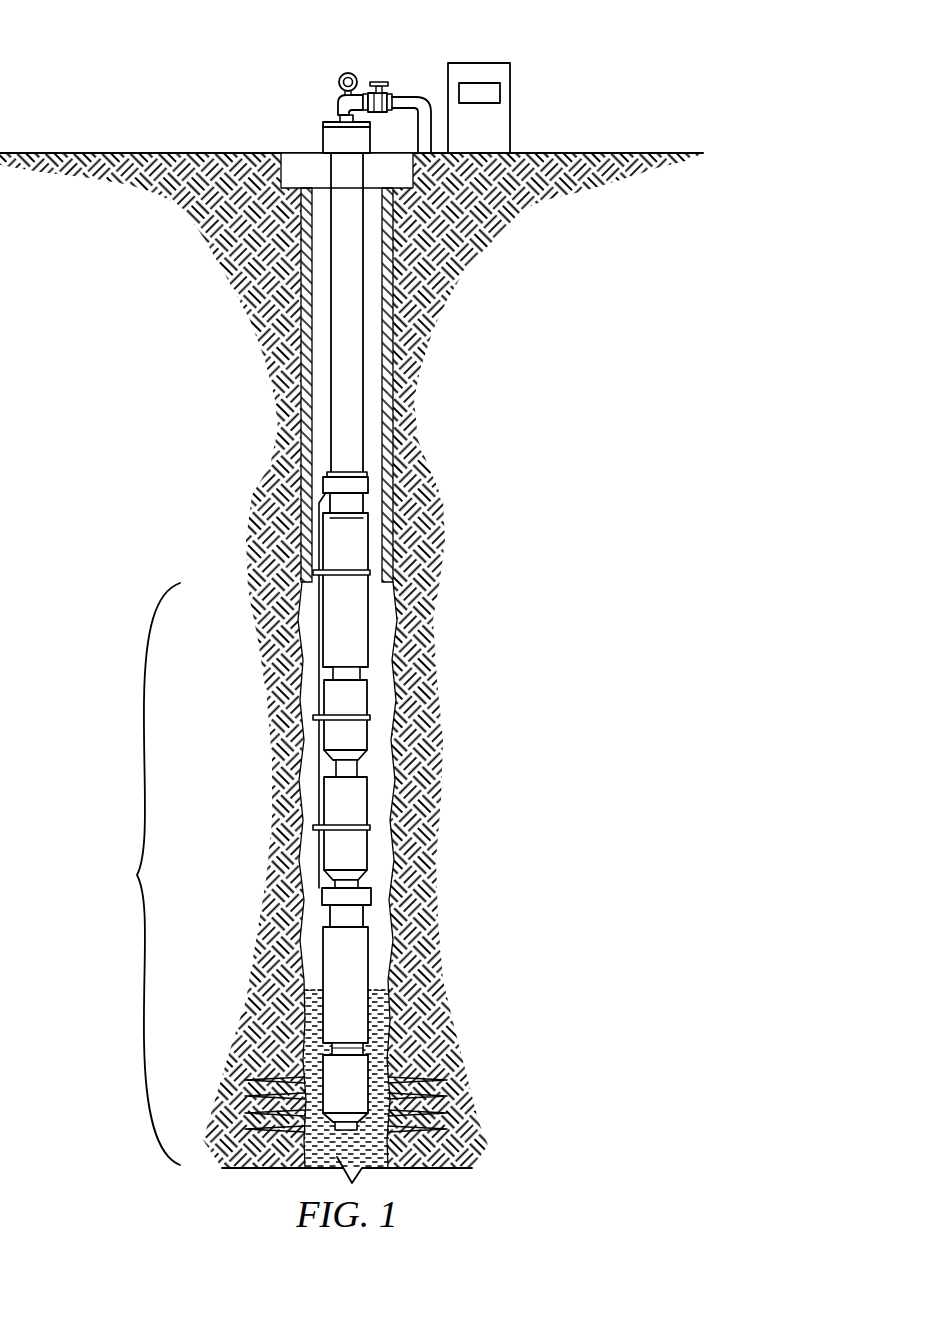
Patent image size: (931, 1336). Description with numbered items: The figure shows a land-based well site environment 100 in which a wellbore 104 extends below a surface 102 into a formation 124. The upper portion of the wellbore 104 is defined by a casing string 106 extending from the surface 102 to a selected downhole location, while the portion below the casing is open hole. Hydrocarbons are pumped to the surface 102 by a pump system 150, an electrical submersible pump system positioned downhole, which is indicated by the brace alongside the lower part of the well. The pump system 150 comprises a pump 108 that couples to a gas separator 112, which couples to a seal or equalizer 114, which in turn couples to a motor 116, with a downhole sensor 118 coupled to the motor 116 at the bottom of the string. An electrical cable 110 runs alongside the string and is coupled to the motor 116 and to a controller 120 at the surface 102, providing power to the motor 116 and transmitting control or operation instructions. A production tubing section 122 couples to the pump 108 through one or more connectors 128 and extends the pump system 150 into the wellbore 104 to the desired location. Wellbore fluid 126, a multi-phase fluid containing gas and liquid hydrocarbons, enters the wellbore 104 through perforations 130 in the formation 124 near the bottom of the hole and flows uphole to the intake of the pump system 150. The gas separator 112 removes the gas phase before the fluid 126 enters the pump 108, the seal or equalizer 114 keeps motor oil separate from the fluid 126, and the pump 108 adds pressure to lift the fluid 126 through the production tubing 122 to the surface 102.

The well site environment 100 is at (139, 57).
The surface 102 is at (605, 153).
The wellbore 104 is at (393, 367).
The casing string 106 is at (322, 405).
The pump 108 is at (357, 617).
The electrical cable 110 is at (315, 608).
The gas separator 112 is at (337, 703).
The seal or equalizer 114 is at (337, 802).
The motor 116 is at (337, 988).
The downhole sensor 118 is at (335, 1090).
The controller 120 is at (480, 63).
The production tubing section 122 is at (326, 284).
The formation 124 is at (512, 213).
The fluid 126 is at (393, 1028).
The connector 128 is at (356, 487).
The perforations 130 is at (438, 1078).
The pump system 150 is at (137, 875).